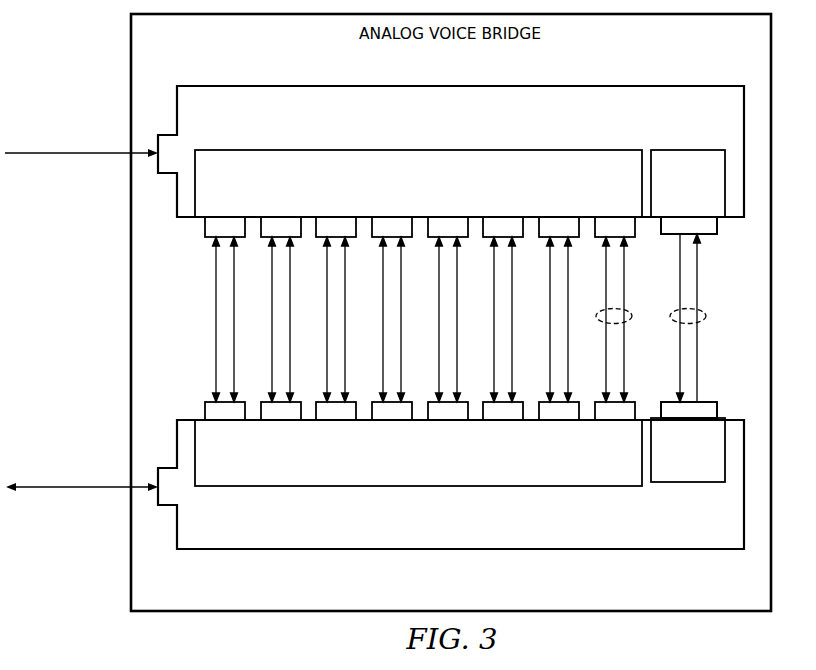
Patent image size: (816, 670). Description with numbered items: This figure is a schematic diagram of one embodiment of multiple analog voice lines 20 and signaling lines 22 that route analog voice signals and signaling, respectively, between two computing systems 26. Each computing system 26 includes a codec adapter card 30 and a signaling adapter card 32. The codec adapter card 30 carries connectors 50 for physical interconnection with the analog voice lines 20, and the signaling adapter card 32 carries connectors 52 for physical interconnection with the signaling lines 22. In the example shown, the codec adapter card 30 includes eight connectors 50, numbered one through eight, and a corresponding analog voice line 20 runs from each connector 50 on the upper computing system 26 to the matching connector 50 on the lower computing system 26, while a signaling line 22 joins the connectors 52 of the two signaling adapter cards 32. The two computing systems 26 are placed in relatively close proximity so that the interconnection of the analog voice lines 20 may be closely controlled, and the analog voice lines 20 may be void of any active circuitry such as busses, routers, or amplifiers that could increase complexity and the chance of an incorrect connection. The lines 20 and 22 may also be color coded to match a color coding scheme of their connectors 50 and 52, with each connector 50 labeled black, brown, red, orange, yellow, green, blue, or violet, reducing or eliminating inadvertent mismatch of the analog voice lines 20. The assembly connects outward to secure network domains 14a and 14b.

The secure network domain 14a is at (81, 120).
The secure network domain 14b is at (82, 452).
The analog voice lines 20 is at (233, 320).
The signaling lines 22 is at (707, 316).
The computing systems 26 is at (627, 83).
The codec adapter card 30 is at (542, 146).
The signaling adapter card 32 is at (702, 146).
The connectors 50 is at (236, 214).
The connectors 52 is at (719, 230).